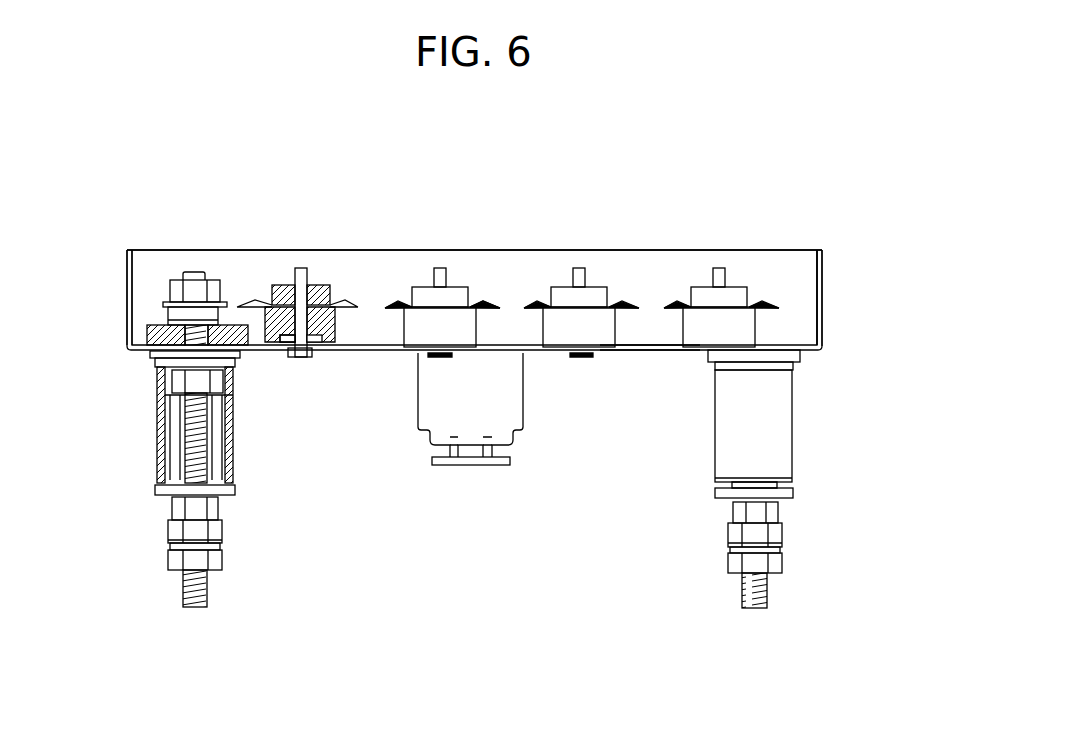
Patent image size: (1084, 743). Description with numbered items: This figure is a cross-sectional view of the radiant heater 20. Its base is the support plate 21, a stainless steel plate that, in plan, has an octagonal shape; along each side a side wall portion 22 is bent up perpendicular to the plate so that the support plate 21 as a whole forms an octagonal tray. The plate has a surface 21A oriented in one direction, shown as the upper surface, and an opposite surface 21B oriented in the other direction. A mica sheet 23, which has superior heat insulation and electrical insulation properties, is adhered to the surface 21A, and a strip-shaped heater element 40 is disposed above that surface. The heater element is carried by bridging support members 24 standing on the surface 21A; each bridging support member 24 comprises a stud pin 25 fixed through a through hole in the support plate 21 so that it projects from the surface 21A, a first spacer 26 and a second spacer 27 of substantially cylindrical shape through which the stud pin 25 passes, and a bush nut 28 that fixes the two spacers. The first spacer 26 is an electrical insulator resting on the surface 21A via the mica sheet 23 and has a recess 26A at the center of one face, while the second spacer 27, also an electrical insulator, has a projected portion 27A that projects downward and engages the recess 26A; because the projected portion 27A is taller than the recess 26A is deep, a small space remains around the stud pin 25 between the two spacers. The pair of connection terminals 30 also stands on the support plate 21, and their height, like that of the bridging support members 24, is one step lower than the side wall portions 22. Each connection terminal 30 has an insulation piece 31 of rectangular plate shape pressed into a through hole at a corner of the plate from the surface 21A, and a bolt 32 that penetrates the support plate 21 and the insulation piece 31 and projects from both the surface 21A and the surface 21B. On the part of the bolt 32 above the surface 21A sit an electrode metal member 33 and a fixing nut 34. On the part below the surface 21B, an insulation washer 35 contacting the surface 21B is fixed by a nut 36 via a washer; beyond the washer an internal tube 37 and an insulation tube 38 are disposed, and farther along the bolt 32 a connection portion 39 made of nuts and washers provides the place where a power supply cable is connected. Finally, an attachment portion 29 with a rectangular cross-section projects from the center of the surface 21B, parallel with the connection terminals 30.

The radiant heater 20 is at (858, 158).
The support plate 21 is at (832, 352).
The surface oriented in one direction 21A is at (648, 339).
The surface oriented in the other direction 21B is at (648, 364).
The side wall portion 22 is at (127, 268).
The mica sheet 23 is at (800, 344).
The bridging support member 24 is at (352, 259).
The stud pin 25 is at (300, 268).
The first spacer 26 is at (333, 328).
The recess 26A is at (289, 353).
The second spacer 27 is at (320, 300).
The projected portion 27A is at (316, 343).
The bush nut 28 is at (278, 297).
The attachment portion 29 is at (470, 446).
The connection terminal 30 is at (466, 400).
The insulation piece 31 is at (150, 332).
The bolt 32 is at (187, 592).
The electrode metal member 33 is at (165, 305).
The fixing nut 34 is at (172, 292).
The insulation washer 35 is at (152, 357).
The nut 36 is at (172, 385).
The internal tube 37 is at (210, 430).
The insulation tube 38 is at (160, 460).
The connection portion 39 is at (150, 557).
The heater element 40 is at (484, 298).